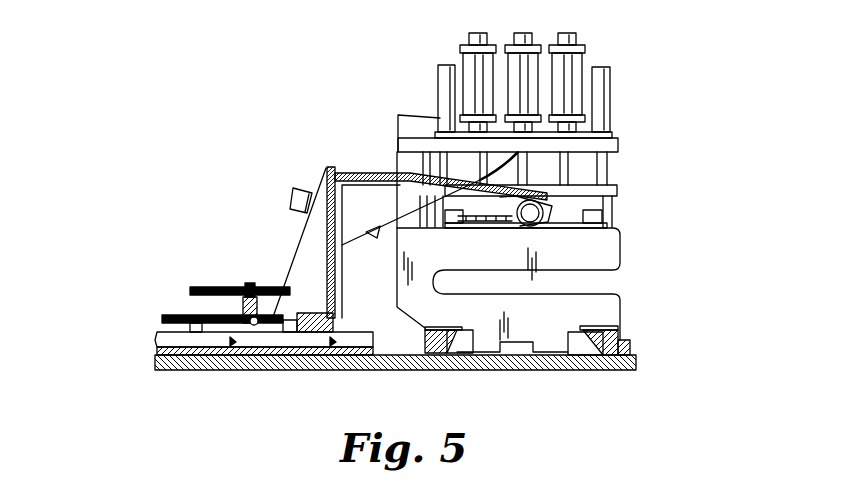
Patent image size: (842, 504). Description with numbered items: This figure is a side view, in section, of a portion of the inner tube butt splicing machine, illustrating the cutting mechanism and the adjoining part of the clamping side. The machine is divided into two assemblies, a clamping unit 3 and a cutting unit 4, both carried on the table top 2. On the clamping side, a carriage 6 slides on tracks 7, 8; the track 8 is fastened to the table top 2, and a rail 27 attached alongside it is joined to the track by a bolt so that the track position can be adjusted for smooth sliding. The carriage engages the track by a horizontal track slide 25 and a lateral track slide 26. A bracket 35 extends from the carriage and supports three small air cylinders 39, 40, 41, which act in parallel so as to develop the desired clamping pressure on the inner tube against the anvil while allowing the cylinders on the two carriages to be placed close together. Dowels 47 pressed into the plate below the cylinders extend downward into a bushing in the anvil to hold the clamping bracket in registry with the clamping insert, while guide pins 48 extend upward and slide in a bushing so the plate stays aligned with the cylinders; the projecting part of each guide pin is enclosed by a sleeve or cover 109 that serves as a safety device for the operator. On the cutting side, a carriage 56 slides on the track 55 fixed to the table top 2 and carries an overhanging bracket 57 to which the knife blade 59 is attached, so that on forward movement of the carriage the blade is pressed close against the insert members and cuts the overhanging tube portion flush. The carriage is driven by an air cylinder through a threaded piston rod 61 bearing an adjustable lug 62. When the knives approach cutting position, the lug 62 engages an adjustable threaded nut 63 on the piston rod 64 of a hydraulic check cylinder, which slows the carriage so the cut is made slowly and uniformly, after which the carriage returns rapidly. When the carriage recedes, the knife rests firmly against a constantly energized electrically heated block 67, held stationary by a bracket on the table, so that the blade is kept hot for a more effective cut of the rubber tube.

The table top 2 is at (317, 355).
The clamping unit 3 is at (650, 58).
The cutting unit 4 is at (120, 340).
The carriage 6 is at (605, 310).
The track 7 is at (433, 353).
The track 8 is at (610, 340).
The horizontal track slide 25 is at (598, 325).
The lateral track slide 26 is at (580, 340).
The rail 27 is at (630, 347).
The bracket 35 is at (407, 120).
The air cylinder 39 is at (580, 63).
The air cylinder 40 is at (521, 35).
The air cylinder 41 is at (477, 35).
The dowels 47 is at (615, 212).
The guide pins 48 is at (607, 167).
The track 55 is at (215, 338).
The carriage 56 is at (300, 327).
The overhanging bracket 57 is at (372, 190).
The knife blade 59 is at (545, 228).
The piston rod 61 is at (168, 318).
The lug 62 is at (243, 305).
The adjustable threaded nut 63 is at (252, 283).
The piston rod 64 is at (233, 290).
The electrically heated block 67 is at (303, 187).
The sleeve or cover 109 is at (610, 100).